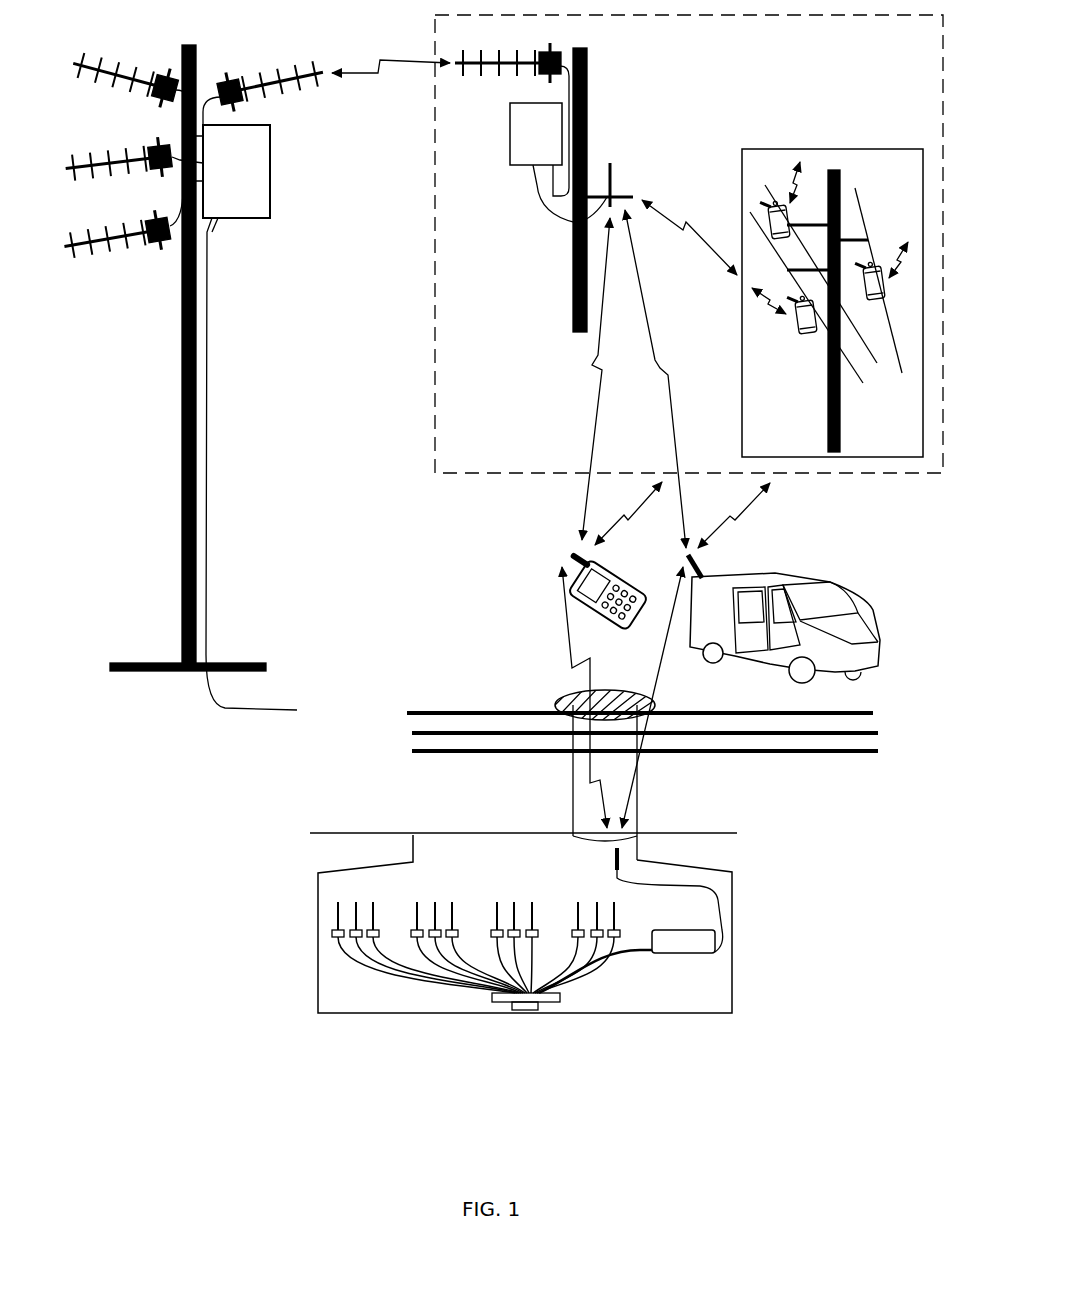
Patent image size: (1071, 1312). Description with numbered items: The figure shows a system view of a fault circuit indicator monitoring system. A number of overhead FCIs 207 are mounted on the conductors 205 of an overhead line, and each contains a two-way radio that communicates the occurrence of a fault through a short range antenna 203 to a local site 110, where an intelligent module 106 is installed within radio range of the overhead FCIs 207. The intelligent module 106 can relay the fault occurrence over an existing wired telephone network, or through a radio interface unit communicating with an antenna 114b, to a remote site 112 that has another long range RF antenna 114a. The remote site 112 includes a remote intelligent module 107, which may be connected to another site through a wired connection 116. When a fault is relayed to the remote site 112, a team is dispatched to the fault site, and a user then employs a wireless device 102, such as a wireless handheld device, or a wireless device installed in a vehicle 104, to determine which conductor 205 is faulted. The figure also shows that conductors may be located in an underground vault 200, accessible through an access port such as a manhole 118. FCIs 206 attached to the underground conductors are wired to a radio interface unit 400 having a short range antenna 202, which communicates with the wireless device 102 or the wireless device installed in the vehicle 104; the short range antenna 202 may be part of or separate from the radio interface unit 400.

The wireless device 102 is at (614, 566).
The vehicle 104 is at (808, 575).
The intelligent module 106 is at (510, 166).
The remote intelligent module 107 is at (254, 219).
The local site 110 is at (573, 294).
The remote site 112 is at (182, 345).
The long range RF antenna 114a is at (318, 88).
The antenna 114b is at (463, 68).
The wired connection 116 is at (265, 712).
The manhole 118 is at (566, 702).
The underground vault 200 is at (495, 924).
The short range antenna 202 is at (612, 862).
The short range antenna 203 is at (614, 168).
The conductor 205 is at (858, 380).
The FCIs 206 is at (378, 925).
The overhead FCIs 207 is at (800, 336).
The radio interface unit 400 is at (666, 934).